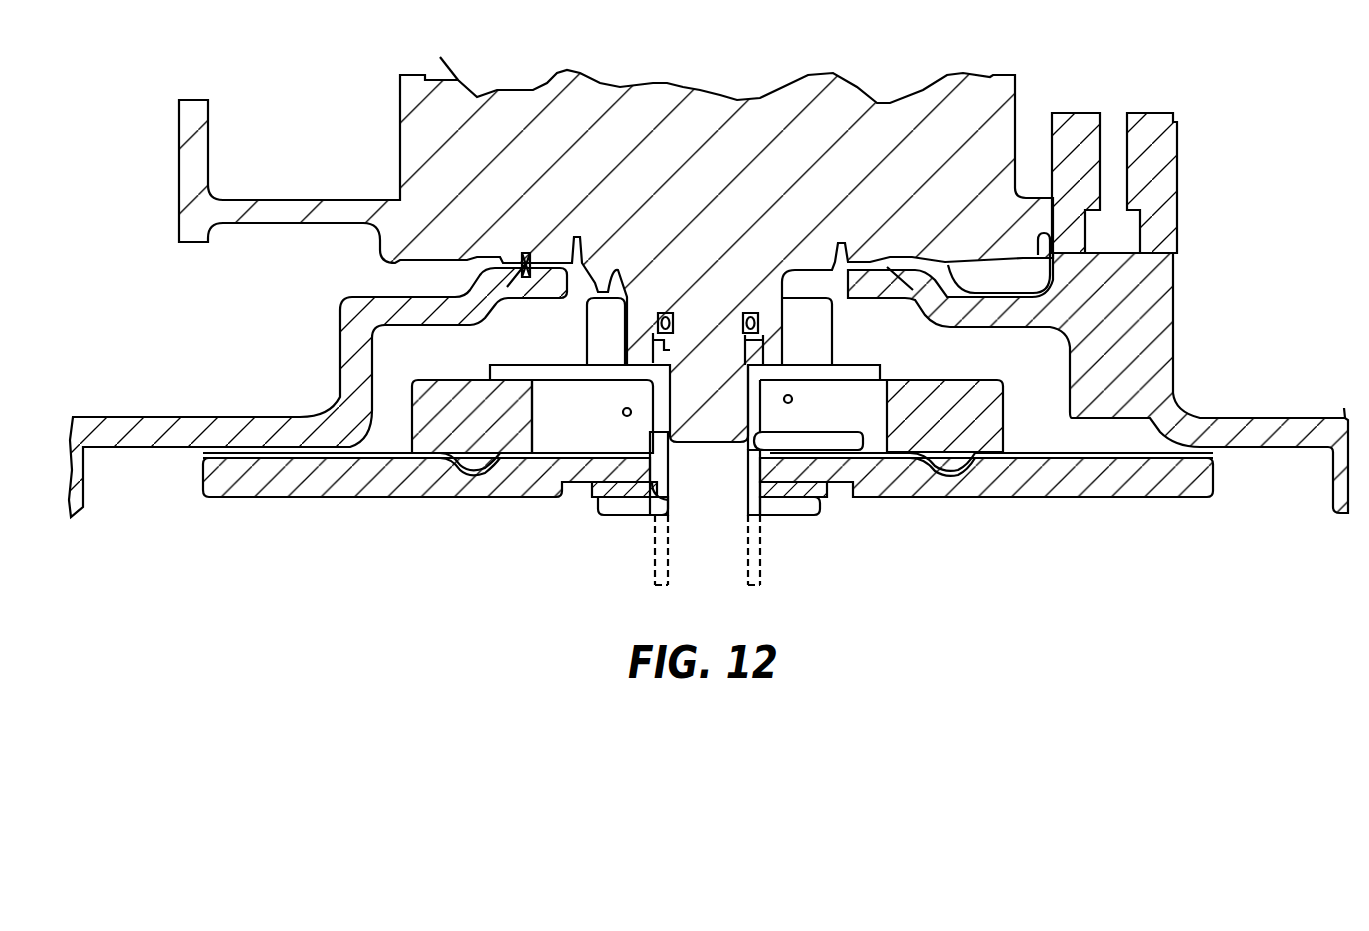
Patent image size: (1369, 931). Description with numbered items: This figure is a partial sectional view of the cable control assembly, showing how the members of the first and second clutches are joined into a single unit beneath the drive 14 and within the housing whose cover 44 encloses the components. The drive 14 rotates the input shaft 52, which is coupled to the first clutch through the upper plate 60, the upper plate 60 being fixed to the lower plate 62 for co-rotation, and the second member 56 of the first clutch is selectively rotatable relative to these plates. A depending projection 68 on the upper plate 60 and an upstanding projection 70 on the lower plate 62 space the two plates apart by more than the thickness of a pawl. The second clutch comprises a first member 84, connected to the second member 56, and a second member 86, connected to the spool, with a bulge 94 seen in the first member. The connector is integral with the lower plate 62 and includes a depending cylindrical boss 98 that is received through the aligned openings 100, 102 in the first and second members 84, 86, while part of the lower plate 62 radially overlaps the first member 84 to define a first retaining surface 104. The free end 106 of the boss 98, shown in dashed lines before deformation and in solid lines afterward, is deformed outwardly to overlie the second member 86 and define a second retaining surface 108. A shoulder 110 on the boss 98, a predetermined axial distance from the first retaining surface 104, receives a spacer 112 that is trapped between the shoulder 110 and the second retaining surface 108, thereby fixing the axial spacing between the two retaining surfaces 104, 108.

The drive 14 is at (976, 105).
The cover 44 is at (1168, 298).
The input shaft 52 is at (732, 362).
The second member 56 is at (968, 392).
The upper plate 60 is at (870, 368).
The lower plate 62 is at (826, 440).
The projection 68 is at (660, 394).
The projection 70 is at (752, 380).
The first member 84 is at (374, 458).
The second member 86 is at (243, 487).
The bulge 94 is at (452, 474).
The boss 98 is at (664, 457).
The opening 100 is at (757, 433).
The opening 102 is at (755, 485).
The first retaining surface 104 is at (853, 440).
The free end 106 is at (597, 503).
The second retaining surface 108 is at (632, 507).
The shoulder 110 is at (663, 495).
The spacer 112 is at (818, 500).